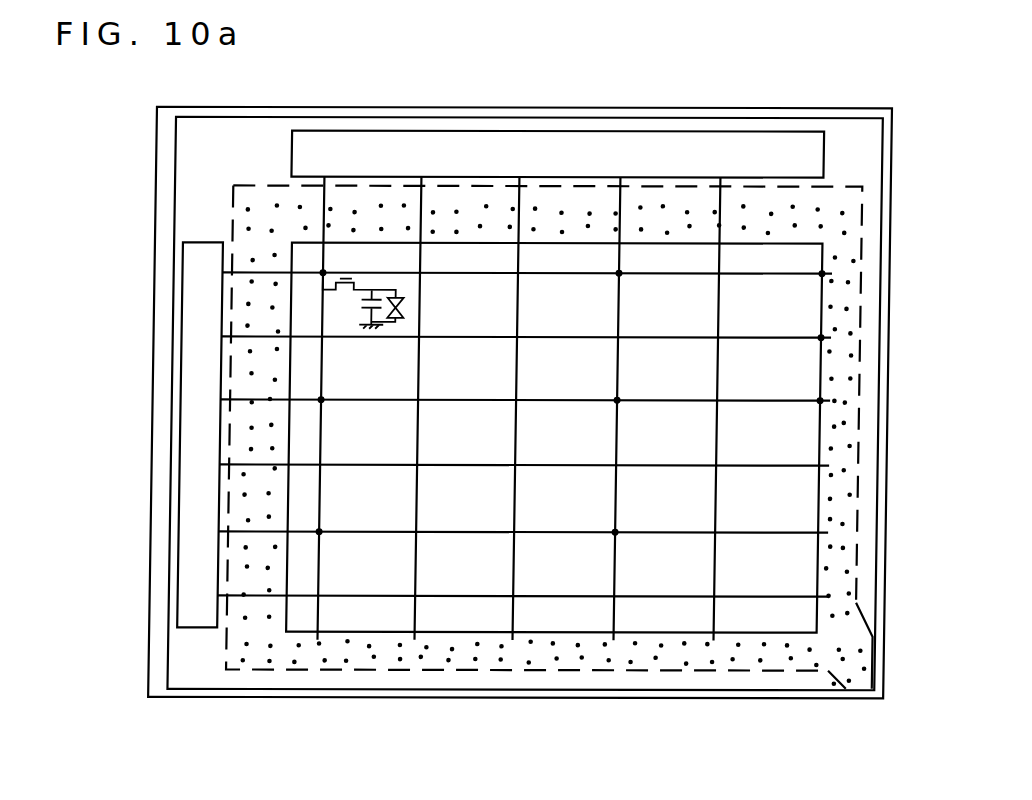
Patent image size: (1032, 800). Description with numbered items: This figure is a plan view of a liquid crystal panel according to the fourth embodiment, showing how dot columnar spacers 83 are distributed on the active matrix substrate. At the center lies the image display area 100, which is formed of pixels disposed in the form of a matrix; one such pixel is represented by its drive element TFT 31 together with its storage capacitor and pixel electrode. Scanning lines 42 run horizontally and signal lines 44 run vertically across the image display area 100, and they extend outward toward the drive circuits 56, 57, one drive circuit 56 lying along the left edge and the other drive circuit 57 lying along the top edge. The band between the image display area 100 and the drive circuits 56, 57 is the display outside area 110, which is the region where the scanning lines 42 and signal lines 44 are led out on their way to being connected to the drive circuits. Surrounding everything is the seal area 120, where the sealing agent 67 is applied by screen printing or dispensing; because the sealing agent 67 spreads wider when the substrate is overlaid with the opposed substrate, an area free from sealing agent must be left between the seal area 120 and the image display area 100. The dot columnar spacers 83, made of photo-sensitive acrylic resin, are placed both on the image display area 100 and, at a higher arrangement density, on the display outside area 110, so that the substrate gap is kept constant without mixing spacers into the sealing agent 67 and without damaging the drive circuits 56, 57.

The drive element TFT 31 is at (348, 277).
The signal line 44 is at (419, 200).
The display outside area 110 is at (584, 200).
The drive circuit 57 is at (714, 138).
The sealing agent 67 is at (527, 372).
The seal area 120 is at (860, 150).
The scanning line 42 is at (491, 367).
The drive circuit 56 is at (192, 346).
The dot columnar spacer 83 is at (619, 273).
The image display area 100 is at (524, 437).